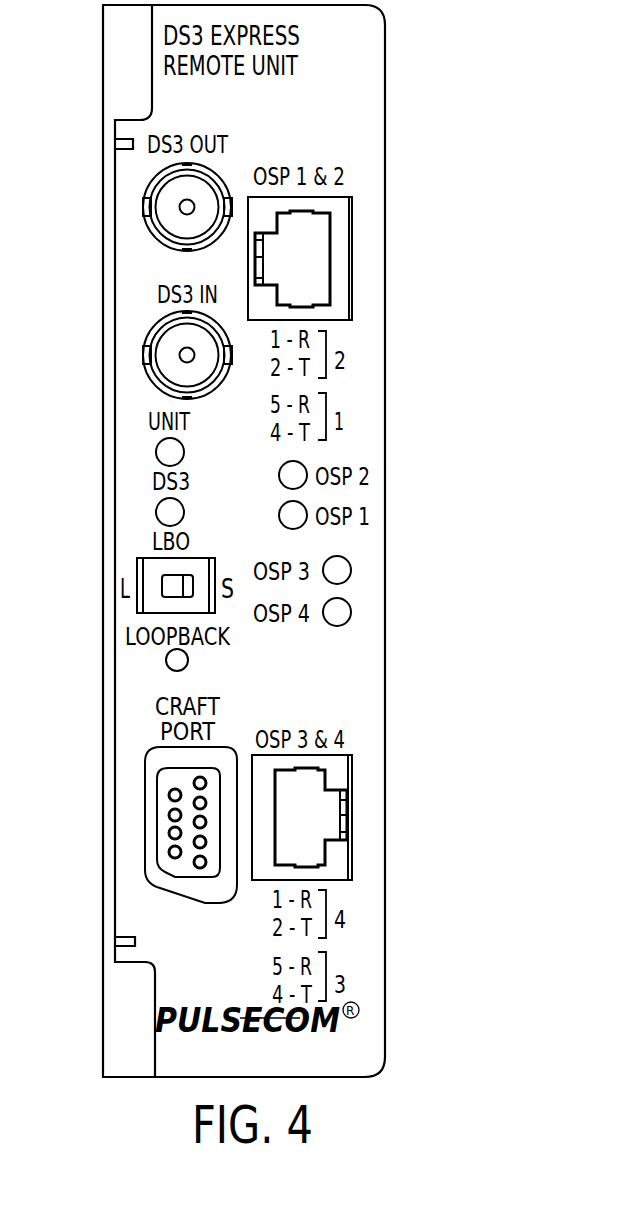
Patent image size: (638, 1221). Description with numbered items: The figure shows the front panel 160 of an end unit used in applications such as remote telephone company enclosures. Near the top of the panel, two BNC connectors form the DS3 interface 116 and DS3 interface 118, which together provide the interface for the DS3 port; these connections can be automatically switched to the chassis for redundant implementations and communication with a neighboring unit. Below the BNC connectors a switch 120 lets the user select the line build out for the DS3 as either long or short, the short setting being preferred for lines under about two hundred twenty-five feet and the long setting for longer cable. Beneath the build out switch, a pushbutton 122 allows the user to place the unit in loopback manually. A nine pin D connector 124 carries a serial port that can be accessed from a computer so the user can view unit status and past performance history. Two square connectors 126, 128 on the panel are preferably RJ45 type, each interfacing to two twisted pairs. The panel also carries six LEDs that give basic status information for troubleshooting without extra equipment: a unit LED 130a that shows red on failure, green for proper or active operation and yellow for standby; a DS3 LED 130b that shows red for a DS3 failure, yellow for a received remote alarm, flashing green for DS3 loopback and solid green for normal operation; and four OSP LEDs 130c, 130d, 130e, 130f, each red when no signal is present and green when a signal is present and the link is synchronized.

The DS3 interface 116 is at (143, 207).
The DS3 interface 118 is at (143, 355).
The switch 120 is at (137, 568).
The pushbutton 122 is at (166, 660).
The 9 pin D connector 124 is at (147, 822).
The square connector 126 is at (352, 253).
The square connector 128 is at (352, 820).
The unit LED 130a is at (156, 452).
The DS3 LED 130b is at (156, 512).
The OSP LED 130c is at (279, 472).
The OSP LED 130d is at (279, 512).
The OSP LED 130e is at (351, 568).
The OSP LED 130f is at (351, 610).
The front panel 160 is at (480, 96).